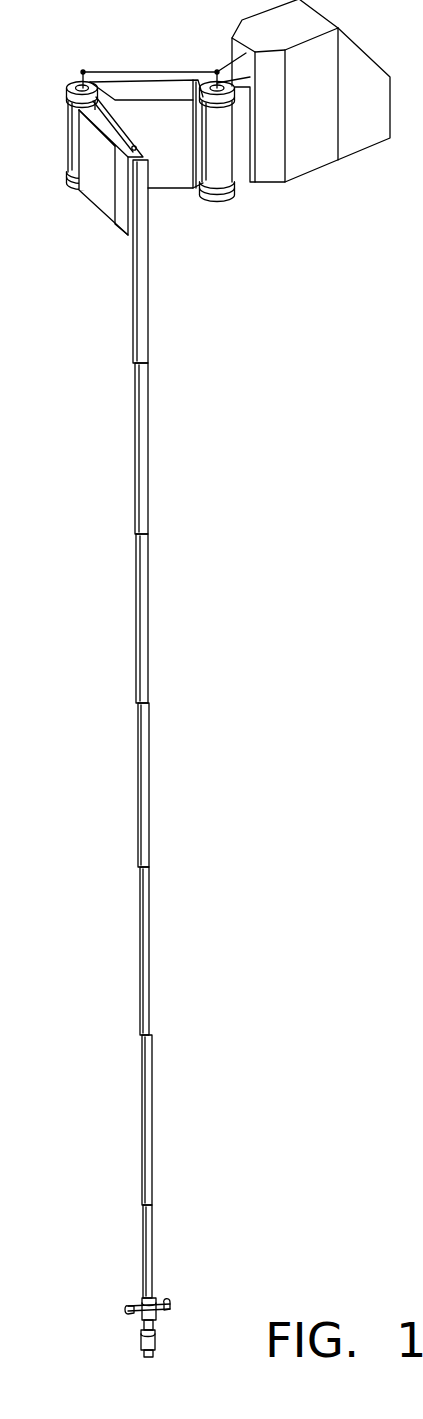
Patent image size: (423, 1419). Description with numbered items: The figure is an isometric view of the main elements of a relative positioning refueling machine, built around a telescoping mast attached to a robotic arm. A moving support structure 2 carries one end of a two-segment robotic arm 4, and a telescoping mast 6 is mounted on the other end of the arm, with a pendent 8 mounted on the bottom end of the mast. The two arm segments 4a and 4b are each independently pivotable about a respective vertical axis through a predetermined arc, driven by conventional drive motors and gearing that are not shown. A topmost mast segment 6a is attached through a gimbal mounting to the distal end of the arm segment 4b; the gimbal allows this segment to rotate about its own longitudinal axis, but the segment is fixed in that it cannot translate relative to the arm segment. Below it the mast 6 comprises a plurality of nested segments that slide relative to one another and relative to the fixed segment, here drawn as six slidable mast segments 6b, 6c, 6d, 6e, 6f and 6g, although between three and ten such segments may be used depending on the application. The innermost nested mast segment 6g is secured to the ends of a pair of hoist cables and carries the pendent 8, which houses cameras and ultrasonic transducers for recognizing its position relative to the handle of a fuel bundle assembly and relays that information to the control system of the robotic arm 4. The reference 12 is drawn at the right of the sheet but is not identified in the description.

The moving support structure 2 is at (318, 101).
The robotic arm 4 is at (145, 78).
The arm segment 4a is at (183, 139).
The arm segment 4b is at (102, 185).
The telescoping mast 6 is at (143, 729).
The topmost mast segment 6a is at (132, 300).
The slidable mast segment 6b is at (135, 447).
The slidable mast segment 6c is at (136, 670).
The slidable mast segment 6d is at (138, 785).
The slidable mast segment 6e is at (140, 948).
The slidable mast segment 6f is at (142, 1088).
The innermost nested mast segment 6g is at (143, 1250).
The pendent 8 is at (167, 1328).
The support 12 is at (422, 370).